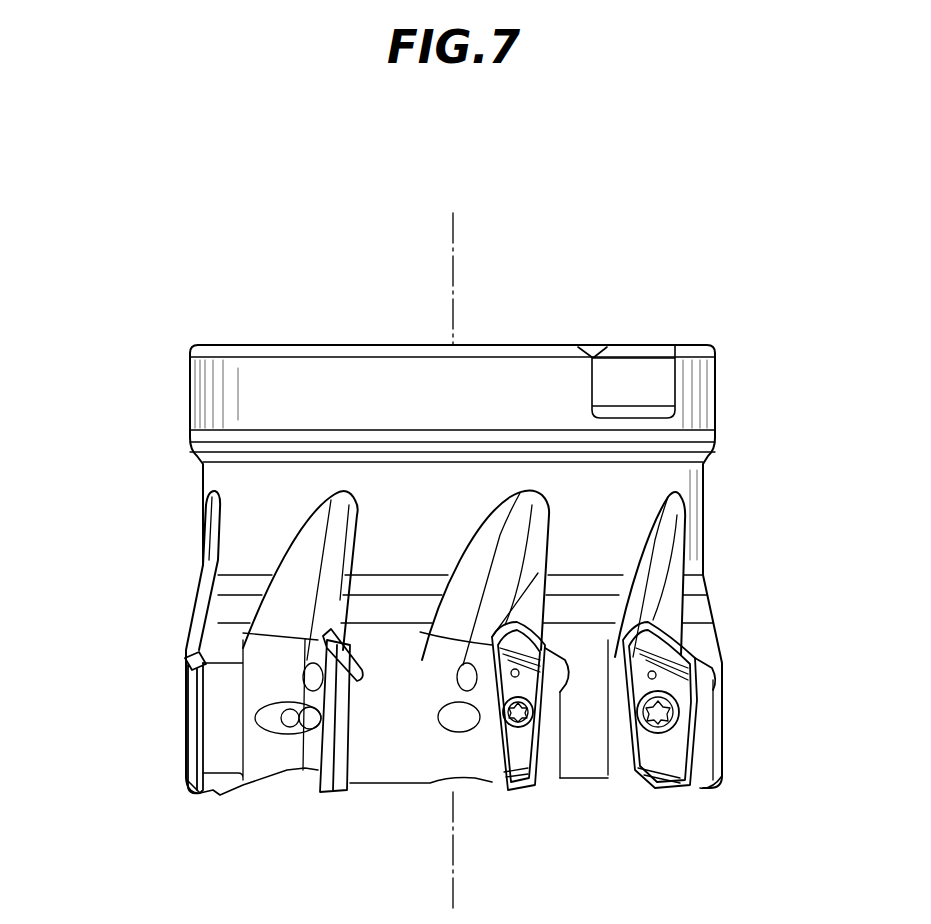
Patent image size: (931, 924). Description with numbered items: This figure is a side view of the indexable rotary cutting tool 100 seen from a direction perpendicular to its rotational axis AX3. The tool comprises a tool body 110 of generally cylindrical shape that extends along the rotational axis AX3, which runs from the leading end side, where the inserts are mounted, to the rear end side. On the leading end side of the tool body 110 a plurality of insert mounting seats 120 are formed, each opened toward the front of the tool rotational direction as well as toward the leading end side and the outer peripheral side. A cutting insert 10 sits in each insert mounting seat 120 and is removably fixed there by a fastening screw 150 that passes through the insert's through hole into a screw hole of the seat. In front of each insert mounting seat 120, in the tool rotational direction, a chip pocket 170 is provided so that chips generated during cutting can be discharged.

The indexable rotary cutting tool 100 is at (176, 236).
The tool body 110 is at (213, 395).
The insert mounting seat 120 is at (348, 740).
The fastening screw 150 is at (698, 728).
The chip pocket 170 is at (520, 518).
The cutting insert 10 is at (327, 790).
The rotational axis AX3 is at (453, 258).